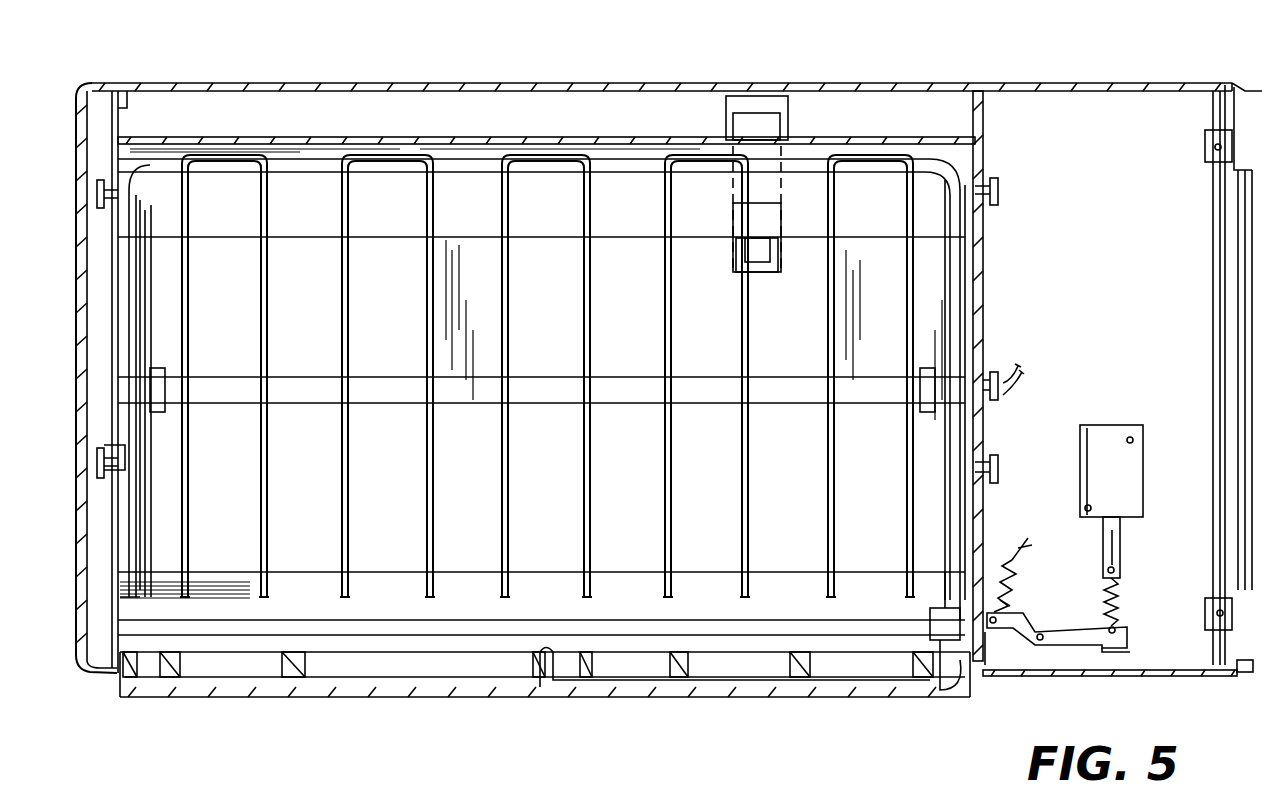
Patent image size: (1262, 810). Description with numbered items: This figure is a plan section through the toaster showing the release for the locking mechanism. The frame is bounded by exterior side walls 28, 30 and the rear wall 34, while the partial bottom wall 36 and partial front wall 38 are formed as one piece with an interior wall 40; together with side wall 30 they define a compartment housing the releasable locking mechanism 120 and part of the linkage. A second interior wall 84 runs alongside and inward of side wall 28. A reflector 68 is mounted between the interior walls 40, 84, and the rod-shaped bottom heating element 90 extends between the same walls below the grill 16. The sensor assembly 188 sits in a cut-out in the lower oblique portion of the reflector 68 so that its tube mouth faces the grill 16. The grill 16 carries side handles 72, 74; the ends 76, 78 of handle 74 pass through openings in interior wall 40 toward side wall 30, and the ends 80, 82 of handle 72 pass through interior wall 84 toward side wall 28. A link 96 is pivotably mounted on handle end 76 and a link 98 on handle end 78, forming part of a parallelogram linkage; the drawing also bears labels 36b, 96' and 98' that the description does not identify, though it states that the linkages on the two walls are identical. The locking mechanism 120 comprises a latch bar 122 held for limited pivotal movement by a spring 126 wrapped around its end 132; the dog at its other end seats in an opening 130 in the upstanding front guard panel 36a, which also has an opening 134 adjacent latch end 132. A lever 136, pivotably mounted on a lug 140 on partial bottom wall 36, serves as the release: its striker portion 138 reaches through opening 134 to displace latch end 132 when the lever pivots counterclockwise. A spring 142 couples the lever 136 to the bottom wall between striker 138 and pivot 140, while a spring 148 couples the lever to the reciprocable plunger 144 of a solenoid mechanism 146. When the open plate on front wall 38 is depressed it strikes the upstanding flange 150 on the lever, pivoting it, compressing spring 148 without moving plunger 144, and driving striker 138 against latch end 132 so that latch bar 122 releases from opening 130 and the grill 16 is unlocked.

The grill 16 is at (506, 323).
The exterior side wall 28 is at (82, 273).
The exterior side wall 30 is at (1250, 229).
The rear wall 34 is at (328, 83).
The partial bottom wall 36 is at (1198, 288).
The upstanding front guard panel 36a is at (697, 620).
The basket bottom plate 36b is at (785, 578).
The partial front wall 38 is at (1205, 677).
The interior wall 40 is at (982, 258).
The reflector 68 is at (412, 137).
The side handle 72 is at (150, 232).
The side handle 74 is at (943, 275).
The handle end 76 is at (998, 464).
The handle end 78 is at (1000, 188).
The handle end 80 is at (100, 454).
The handle end 82 is at (93, 172).
The interior wall 84 is at (118, 304).
The bottom heating element 90 is at (615, 385).
The link 96 is at (1025, 473).
The nut 96' is at (171, 477).
The link 98 is at (1033, 199).
The nut 98' is at (171, 197).
The releasable locking mechanism 120 is at (755, 692).
The latch bar 122 is at (635, 688).
The spring 126 is at (958, 676).
The opening 130 is at (547, 645).
The latch end 132 is at (935, 642).
The opening 134 is at (945, 572).
The lever 136 is at (1013, 612).
The striker portion 138 is at (985, 665).
The lug 140 is at (1041, 634).
The spring 142 is at (1003, 557).
The reciprocable plunger 144 is at (1115, 546).
The solenoid mechanism 146 is at (1115, 430).
The spring 148 is at (1122, 596).
The upstanding flange 150 is at (1118, 652).
The sensor assembly 188 is at (733, 249).